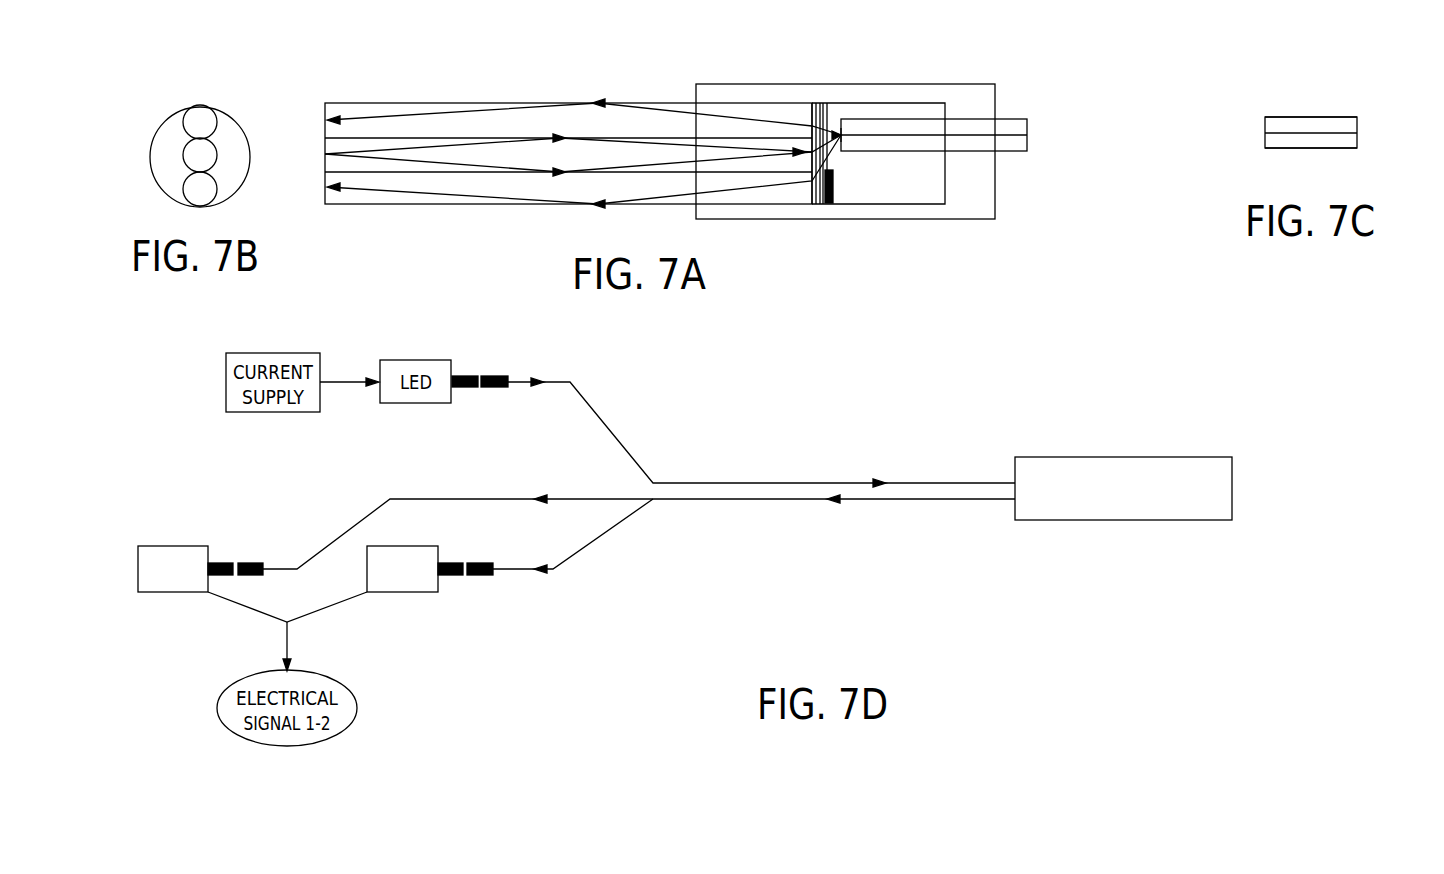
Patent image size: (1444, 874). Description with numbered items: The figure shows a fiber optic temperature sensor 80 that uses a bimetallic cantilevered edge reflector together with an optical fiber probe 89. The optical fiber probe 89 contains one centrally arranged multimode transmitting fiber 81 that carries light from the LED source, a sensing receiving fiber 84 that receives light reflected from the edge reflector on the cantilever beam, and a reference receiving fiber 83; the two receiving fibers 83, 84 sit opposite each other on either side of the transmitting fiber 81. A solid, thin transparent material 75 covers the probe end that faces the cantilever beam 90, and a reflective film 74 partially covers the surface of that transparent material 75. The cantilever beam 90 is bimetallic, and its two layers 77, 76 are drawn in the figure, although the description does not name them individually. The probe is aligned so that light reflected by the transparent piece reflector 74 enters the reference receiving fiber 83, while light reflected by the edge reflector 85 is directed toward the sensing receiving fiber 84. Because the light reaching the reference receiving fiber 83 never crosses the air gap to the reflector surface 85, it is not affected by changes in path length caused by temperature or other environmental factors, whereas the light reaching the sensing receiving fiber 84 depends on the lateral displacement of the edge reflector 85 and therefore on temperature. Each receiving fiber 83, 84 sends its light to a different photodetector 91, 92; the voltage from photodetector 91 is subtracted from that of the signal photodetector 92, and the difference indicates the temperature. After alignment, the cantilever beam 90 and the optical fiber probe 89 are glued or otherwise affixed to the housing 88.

In FIG. 7A, the reflective film 74 is at (832, 205).
In FIG. 7A, the thin transparent material 75 is at (820, 105).
In FIG. 7C, the lower layer of sensor tip 76 is at (1350, 140).
In FIG. 7C, the upper layer of sensor tip 77 is at (1350, 126).
In FIG. 7A, the fiber optic temperature sensor 80 is at (884, 64).
In FIG. 7D, the fiber optic temperature sensor 80 is at (1125, 457).
In FIG. 7B, the transmitting fiber 81 is at (206, 155).
In FIG. 7B, the reference receiving fiber 83 is at (192, 190).
In FIG. 7B, the sensing receiving fiber 84 is at (200, 118).
In FIG. 7A, the edge reflector 85 is at (840, 142).
In FIG. 7A, the housing 88 is at (742, 94).
In FIG. 7A, the optical fiber probe 89 is at (390, 103).
In FIG. 7A, the cantilever beam 90 is at (1012, 118).
In FIG. 7C, the cantilever beam 90 is at (1332, 102).
In FIG. 7D, the photodetector 91 is at (402, 594).
In FIG. 7D, the signal photodetector 92 is at (172, 594).